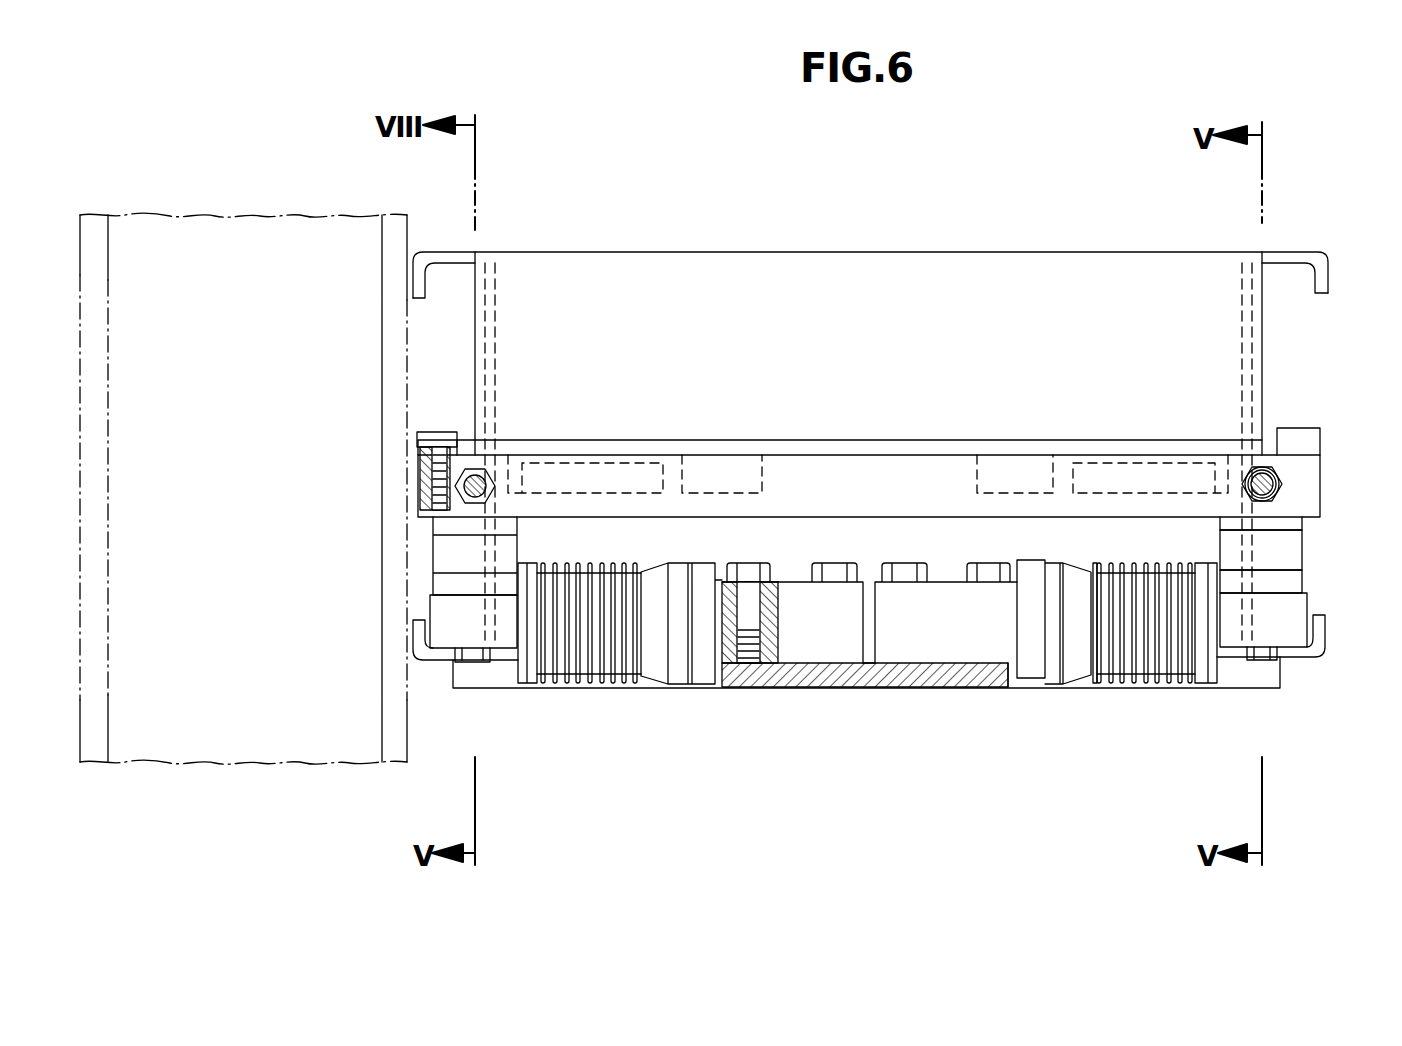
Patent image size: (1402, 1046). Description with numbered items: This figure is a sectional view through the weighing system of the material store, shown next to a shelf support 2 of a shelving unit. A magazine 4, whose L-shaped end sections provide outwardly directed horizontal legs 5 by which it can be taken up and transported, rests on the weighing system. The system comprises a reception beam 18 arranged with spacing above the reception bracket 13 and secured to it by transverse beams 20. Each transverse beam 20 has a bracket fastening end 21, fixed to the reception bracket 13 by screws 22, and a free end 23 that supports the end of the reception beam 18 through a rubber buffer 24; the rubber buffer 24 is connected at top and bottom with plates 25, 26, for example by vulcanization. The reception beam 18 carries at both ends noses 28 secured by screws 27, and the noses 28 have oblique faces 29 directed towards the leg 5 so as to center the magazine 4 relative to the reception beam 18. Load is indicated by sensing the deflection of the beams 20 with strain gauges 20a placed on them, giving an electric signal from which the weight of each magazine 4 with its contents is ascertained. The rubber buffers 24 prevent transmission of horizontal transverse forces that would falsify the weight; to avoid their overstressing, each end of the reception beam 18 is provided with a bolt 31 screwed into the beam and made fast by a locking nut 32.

The shelf support 2 is at (172, 232).
The magazine 4 is at (688, 272).
The horizontal leg 5 is at (924, 448).
The reception bracket 13 is at (874, 687).
The reception beam 18 is at (1305, 485).
The transverse beam 20 is at (658, 684).
The strain gauge 20a is at (604, 685).
The bracket fastening end 21 is at (812, 650).
The screw 22 is at (750, 575).
The free end 23 is at (445, 615).
The rubber buffer 24 is at (443, 557).
The plate 25 is at (1290, 524).
The plate 26 is at (1290, 583).
The screw 27 is at (437, 440).
The nose 28 is at (417, 445).
The oblique face 29 is at (468, 455).
The bolt 31 is at (1246, 494).
The locking nut 32 is at (1248, 470).